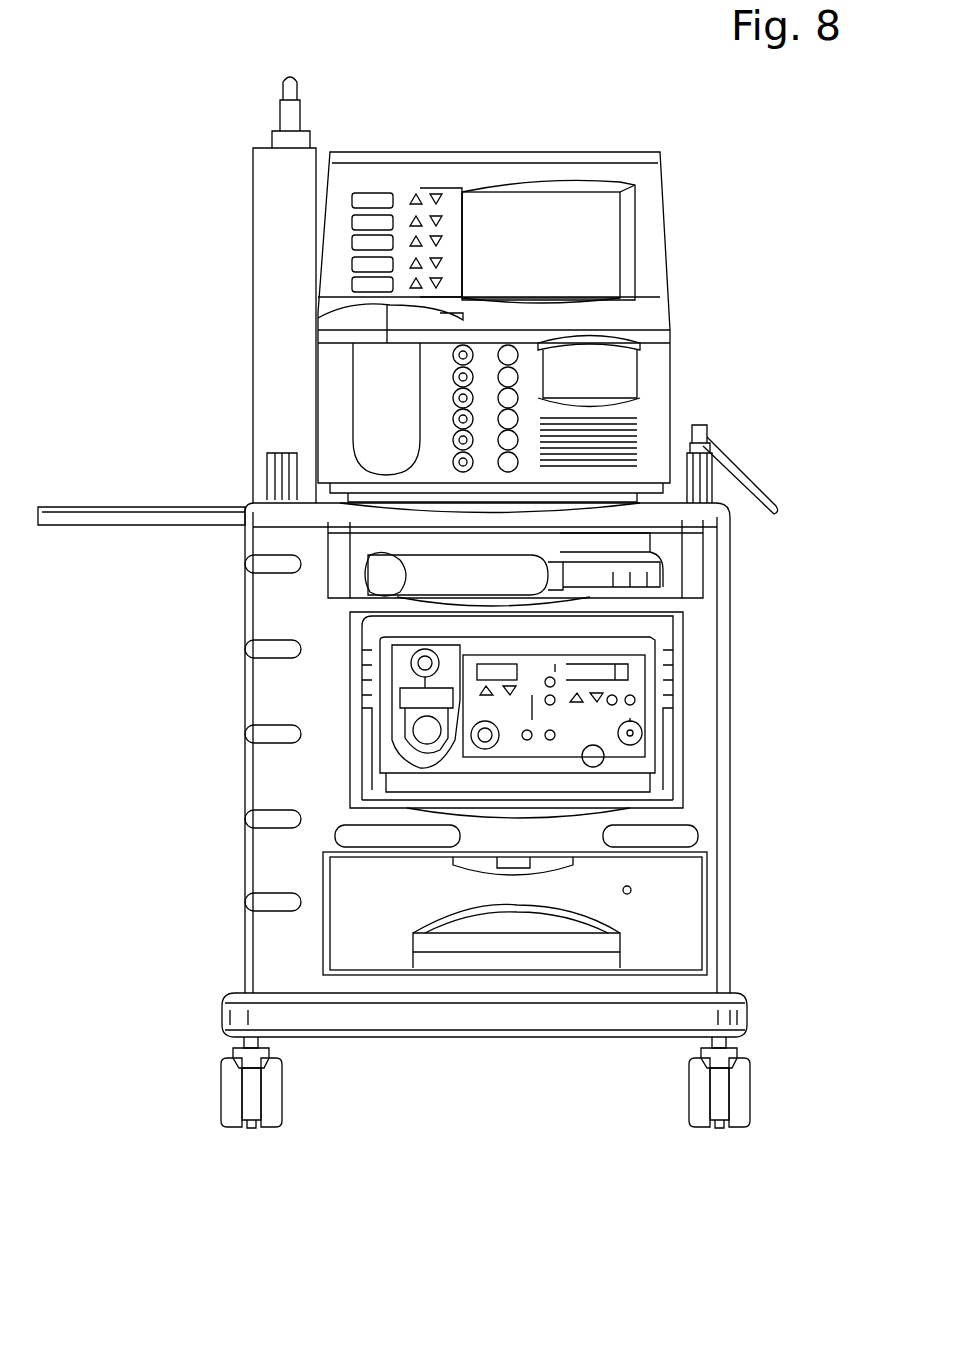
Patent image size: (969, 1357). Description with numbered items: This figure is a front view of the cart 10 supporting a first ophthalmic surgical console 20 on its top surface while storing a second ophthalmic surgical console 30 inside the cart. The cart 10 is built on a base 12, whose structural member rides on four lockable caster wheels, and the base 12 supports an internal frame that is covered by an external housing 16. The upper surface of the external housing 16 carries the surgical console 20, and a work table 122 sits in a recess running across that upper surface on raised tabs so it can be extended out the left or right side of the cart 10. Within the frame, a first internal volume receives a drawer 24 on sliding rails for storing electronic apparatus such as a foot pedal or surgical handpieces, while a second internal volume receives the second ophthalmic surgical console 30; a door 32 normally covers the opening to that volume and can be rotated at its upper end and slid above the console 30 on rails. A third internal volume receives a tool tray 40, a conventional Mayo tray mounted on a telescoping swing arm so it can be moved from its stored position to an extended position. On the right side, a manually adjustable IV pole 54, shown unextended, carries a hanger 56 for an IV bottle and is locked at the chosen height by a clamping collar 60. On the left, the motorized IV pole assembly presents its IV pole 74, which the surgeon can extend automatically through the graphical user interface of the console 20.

The cart 10 is at (748, 281).
The base 12 is at (743, 1006).
The external housing 16 is at (300, 692).
The surgical console 20 is at (518, 152).
The drawer 24 is at (632, 889).
The second ophthalmic surgical console 30 is at (372, 750).
The door 32 is at (657, 622).
The tool tray 40 is at (535, 548).
The IV pole 54 is at (700, 420).
The hanger 56 is at (740, 463).
The clamping collar 60 is at (708, 482).
The IV pole 74 is at (300, 80).
The work table 122 is at (190, 506).